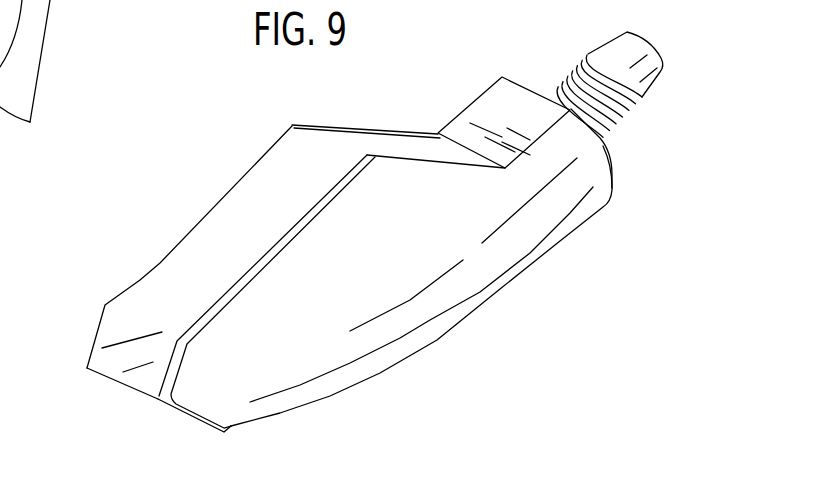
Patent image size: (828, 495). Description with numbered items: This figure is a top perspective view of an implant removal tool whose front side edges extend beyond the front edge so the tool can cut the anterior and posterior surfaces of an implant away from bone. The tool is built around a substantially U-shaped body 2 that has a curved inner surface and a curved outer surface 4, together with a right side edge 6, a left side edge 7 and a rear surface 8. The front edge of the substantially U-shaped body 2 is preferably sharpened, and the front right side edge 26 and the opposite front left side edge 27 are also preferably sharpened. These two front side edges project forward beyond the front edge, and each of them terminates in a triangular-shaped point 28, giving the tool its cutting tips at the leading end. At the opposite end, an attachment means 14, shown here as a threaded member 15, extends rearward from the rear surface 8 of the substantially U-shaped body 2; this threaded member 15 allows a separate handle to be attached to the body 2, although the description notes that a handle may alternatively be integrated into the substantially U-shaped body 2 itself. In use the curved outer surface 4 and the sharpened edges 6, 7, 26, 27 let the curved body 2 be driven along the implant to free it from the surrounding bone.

The substantially U-shaped body 2 is at (320, 399).
The curved outer surface 4 is at (405, 318).
The right side edge 6 is at (260, 270).
The left side edge 7 is at (208, 216).
The rear surface 8 is at (612, 171).
The attachment means 14 is at (579, 61).
The threaded member 15 is at (599, 96).
The front right side edge 26 is at (195, 420).
The side face 27 is at (92, 342).
The triangular-shaped point 28 is at (85, 368).